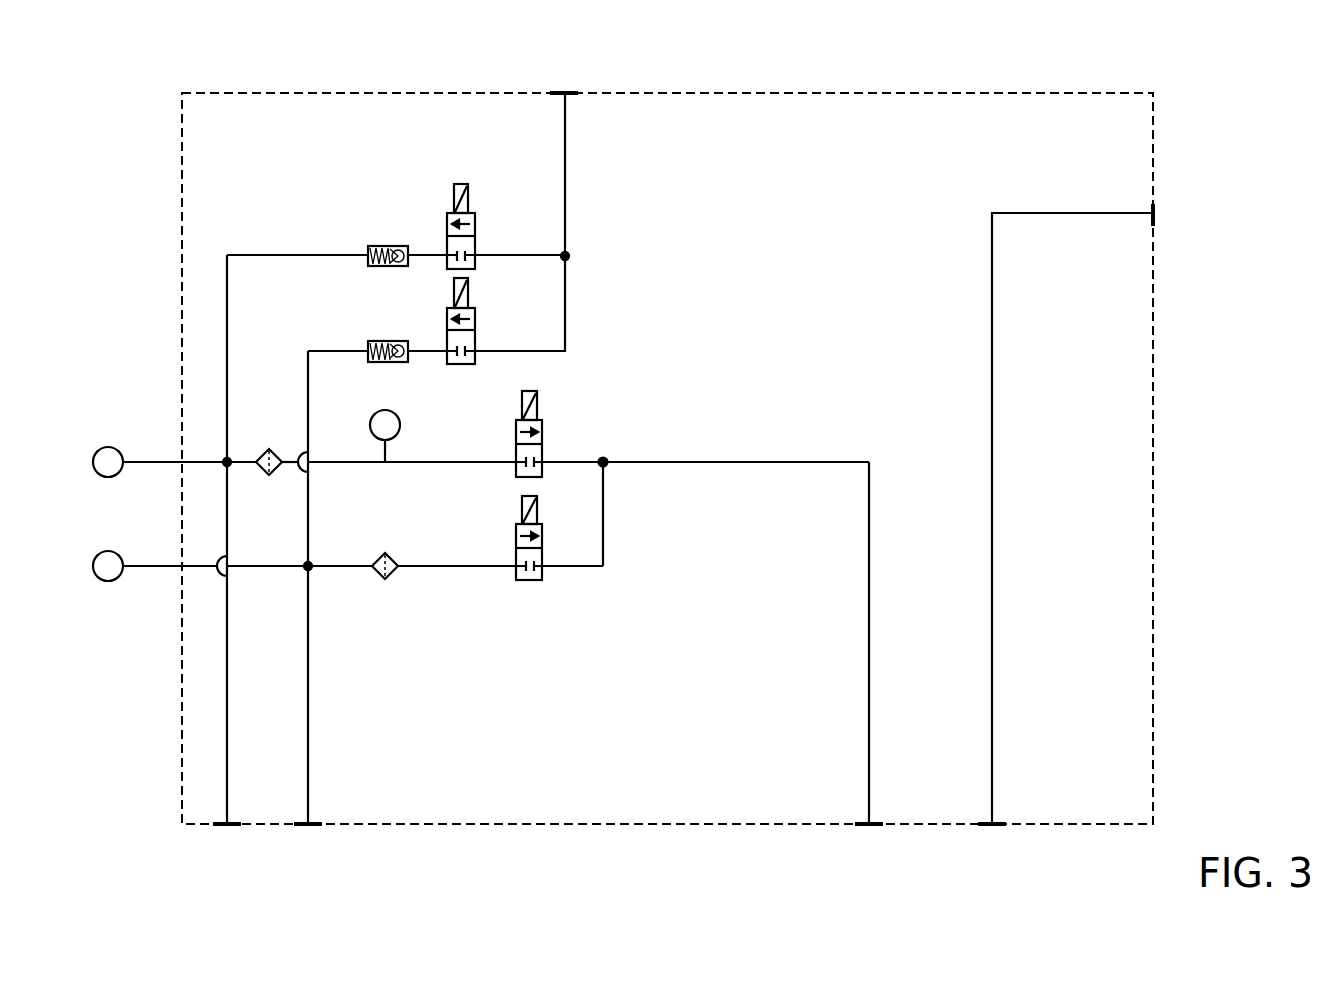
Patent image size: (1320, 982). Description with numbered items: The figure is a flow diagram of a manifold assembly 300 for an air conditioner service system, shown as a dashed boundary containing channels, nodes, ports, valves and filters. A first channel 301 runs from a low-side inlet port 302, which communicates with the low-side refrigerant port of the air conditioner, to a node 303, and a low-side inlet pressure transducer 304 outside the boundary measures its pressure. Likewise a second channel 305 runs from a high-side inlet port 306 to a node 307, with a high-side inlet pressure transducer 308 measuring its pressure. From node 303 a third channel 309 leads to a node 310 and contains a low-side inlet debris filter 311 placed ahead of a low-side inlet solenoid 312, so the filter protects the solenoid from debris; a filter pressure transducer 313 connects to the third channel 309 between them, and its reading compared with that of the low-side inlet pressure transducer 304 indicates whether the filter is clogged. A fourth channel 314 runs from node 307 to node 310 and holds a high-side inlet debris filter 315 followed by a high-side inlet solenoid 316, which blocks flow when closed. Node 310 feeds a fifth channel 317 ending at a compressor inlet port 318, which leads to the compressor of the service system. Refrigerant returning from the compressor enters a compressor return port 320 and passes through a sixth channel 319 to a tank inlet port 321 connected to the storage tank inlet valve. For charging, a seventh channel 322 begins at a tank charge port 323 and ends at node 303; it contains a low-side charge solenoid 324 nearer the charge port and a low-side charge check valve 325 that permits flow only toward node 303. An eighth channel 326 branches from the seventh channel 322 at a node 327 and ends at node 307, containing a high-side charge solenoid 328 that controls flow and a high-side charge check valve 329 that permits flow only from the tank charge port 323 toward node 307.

The manifold assembly 300 is at (757, 63).
The first channel 301 is at (228, 650).
The low-side inlet port 302 is at (228, 828).
The node 303 is at (226, 461).
The low-side inlet pressure transducer 304 is at (109, 446).
The second channel 305 is at (309, 725).
The high-side inlet port 306 is at (309, 828).
The node 307 is at (310, 565).
The high-side inlet pressure transducer 308 is at (109, 550).
The third channel 309 is at (454, 464).
The node 310 is at (605, 460).
The low-side inlet debris filter 311 is at (270, 448).
The low-side inlet solenoid 312 is at (543, 435).
The filter pressure transducer 313 is at (400, 425).
The fourth channel 314 is at (483, 568).
The high-side inlet debris filter 315 is at (385, 581).
The high-side inlet solenoid 316 is at (543, 540).
The fifth channel 317 is at (868, 733).
The compressor inlet port 318 is at (869, 828).
The sixth channel 319 is at (991, 336).
The compressor return port 320 is at (992, 828).
The tank inlet port 321 is at (1152, 210).
The seventh channel 322 is at (261, 254).
The tank charge port 323 is at (568, 92).
The low-side charge solenoid 324 is at (453, 206).
The low-side charge check valve 325 is at (384, 246).
The eighth channel 326 is at (567, 308).
The node 327 is at (568, 254).
The high-side charge solenoid 328 is at (476, 310).
The high-side charge check valve 329 is at (376, 341).